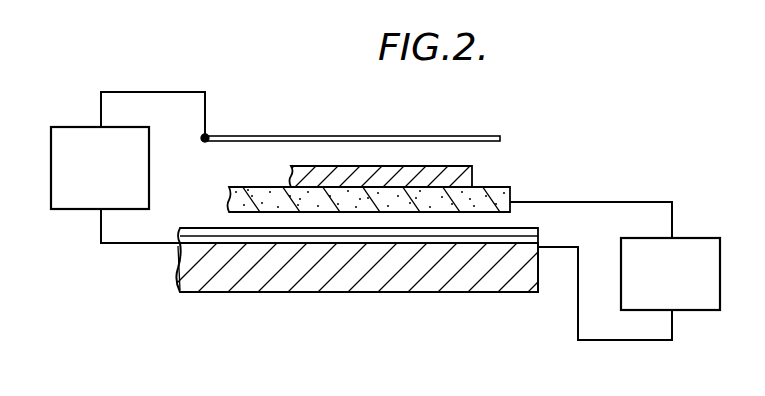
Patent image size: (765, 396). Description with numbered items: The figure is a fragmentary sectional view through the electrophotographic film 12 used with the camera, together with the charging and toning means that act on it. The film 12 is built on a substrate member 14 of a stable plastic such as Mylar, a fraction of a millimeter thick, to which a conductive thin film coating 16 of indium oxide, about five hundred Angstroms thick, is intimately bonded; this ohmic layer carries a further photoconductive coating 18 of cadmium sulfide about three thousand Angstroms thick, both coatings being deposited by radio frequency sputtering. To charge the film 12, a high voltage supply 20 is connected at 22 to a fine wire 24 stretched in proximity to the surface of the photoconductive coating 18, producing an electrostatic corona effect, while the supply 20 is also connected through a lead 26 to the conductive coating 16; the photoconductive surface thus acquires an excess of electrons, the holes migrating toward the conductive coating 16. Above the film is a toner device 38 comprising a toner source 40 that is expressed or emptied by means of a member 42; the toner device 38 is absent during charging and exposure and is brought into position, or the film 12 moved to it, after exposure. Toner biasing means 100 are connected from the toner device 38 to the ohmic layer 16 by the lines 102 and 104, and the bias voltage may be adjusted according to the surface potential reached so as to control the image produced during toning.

The electrophotographic film 12 is at (205, 298).
The substrate member 14 is at (296, 285).
The conductive thin film coating 16 is at (178, 250).
The photoconductive coating 18 is at (193, 230).
The high voltage supply 20 is at (65, 126).
The connection 22 is at (172, 92).
The fine wire 24 is at (468, 135).
The lead 26 is at (100, 232).
The toner device 38 is at (484, 179).
The toner source 40 is at (298, 196).
The member 42 is at (375, 180).
The toner biasing means 100 is at (683, 236).
The line 102 is at (630, 200).
The line 104 is at (652, 342).